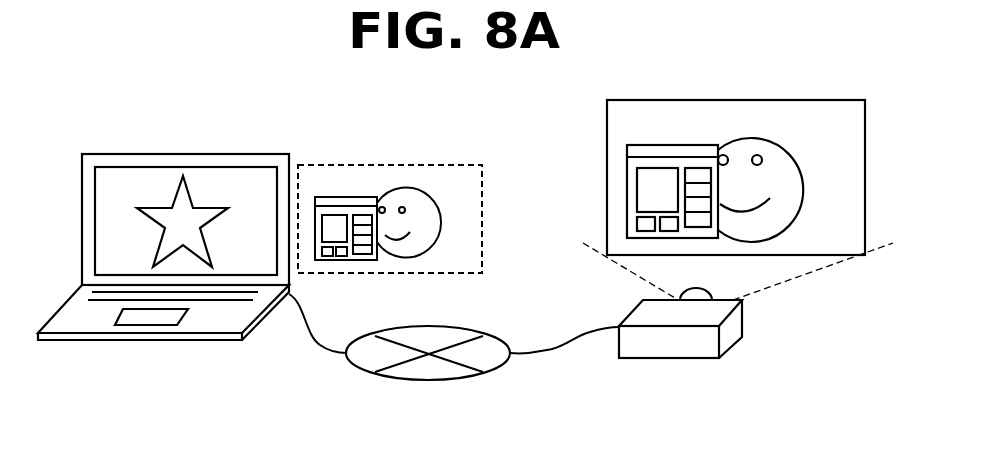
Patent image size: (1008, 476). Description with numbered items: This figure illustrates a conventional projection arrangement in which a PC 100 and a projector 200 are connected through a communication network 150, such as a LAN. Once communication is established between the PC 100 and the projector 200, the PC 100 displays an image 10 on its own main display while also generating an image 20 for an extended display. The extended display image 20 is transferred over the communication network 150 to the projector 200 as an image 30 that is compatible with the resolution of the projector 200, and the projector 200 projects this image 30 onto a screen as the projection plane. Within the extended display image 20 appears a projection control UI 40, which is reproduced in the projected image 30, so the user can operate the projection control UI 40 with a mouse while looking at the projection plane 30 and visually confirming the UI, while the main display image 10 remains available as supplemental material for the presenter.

The image on the main display 10 is at (123, 183).
The image of the extended display 20 is at (443, 165).
The image compatible with the projector resolution (projection plane) 30 is at (663, 100).
The projection control UI 40 is at (323, 197).
The PC 100 is at (83, 340).
The communication network 150 is at (428, 380).
The projector 200 is at (673, 358).